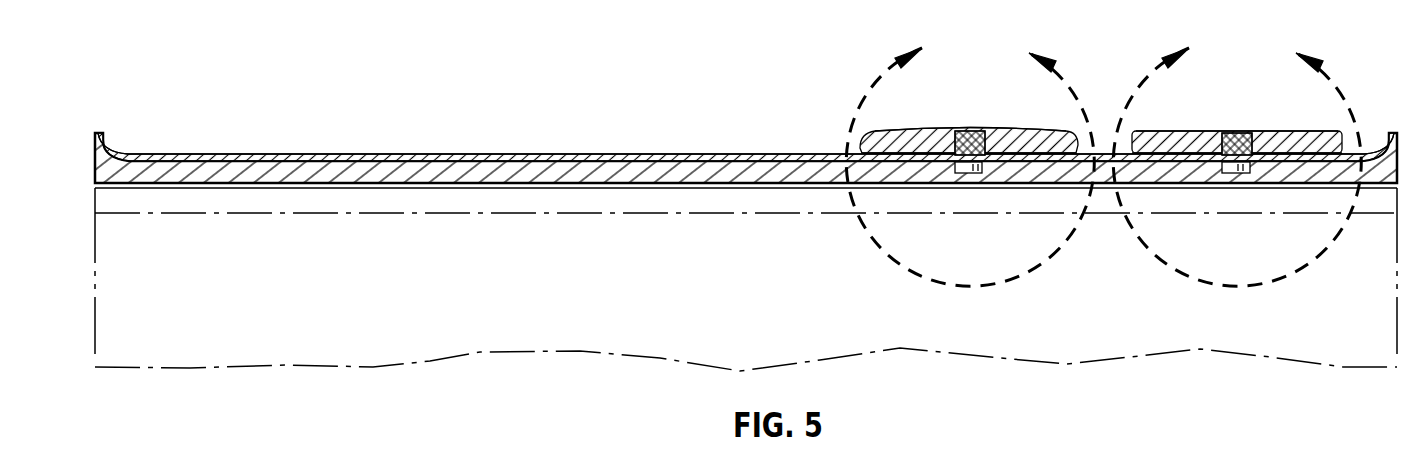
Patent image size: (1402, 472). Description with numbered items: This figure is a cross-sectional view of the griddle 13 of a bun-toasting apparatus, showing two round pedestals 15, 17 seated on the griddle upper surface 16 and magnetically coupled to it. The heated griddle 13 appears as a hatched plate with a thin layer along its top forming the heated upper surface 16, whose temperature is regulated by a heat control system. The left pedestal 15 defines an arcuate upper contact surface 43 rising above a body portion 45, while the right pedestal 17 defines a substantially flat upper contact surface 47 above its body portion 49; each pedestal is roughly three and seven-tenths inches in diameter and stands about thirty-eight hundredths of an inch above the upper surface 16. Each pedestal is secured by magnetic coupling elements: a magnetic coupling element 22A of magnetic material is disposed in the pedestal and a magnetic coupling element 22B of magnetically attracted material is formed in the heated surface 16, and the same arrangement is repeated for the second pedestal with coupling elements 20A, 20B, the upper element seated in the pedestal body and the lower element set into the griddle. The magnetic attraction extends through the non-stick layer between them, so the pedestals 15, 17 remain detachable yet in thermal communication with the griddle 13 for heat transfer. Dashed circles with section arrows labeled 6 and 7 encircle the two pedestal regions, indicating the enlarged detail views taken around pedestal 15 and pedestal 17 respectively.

The griddle 13 is at (308, 148).
The griddle upper surface 16 is at (507, 154).
The pedestal 15 is at (940, 125).
The upper contact surface 43 is at (1012, 131).
The body portion 45 is at (890, 145).
The magnetic coupling element 22A is at (968, 131).
The magnetic coupling element 22B is at (962, 162).
The upper contact surface 47 is at (1186, 131).
The pedestal 17 is at (1254, 126).
The body portion 49 is at (1278, 155).
The second fastener head 20A is at (1235, 133).
The second fastener shank 20B is at (1215, 165).
The section view 6 indicator 6 is at (970, 157).
The section view 7 indicator 7 is at (1237, 157).